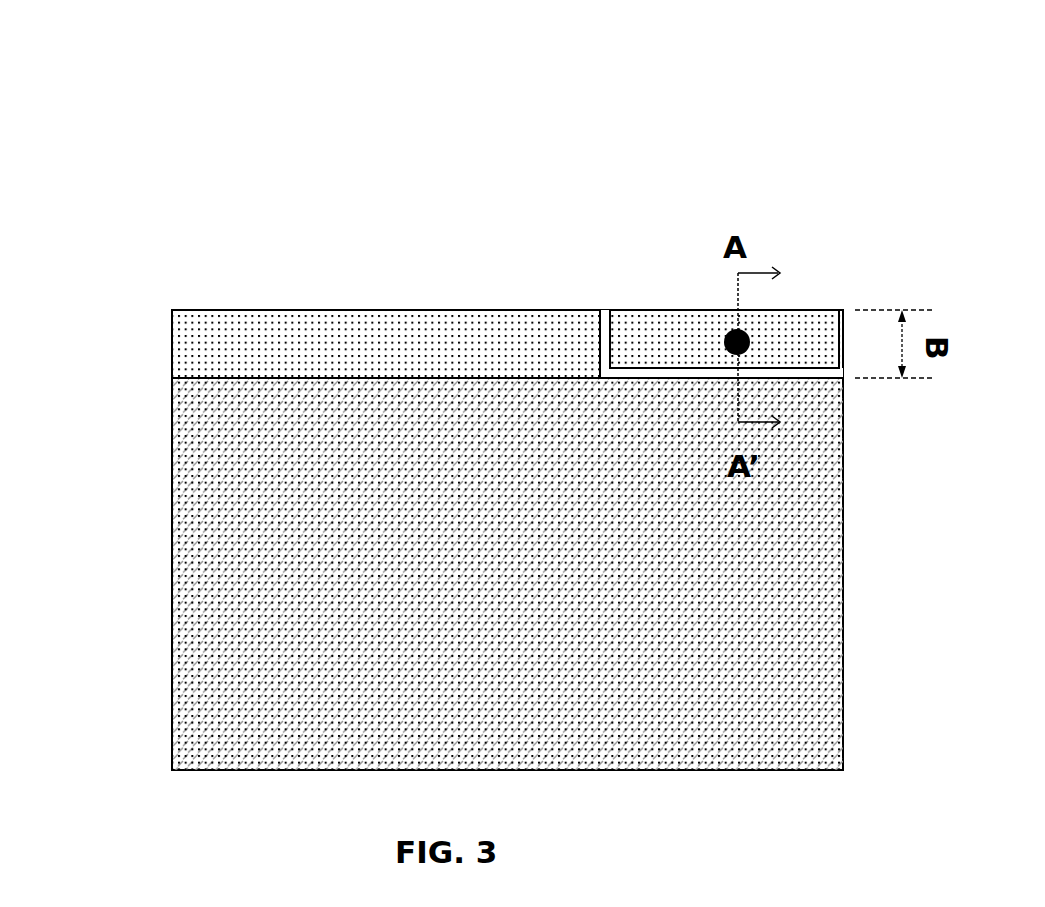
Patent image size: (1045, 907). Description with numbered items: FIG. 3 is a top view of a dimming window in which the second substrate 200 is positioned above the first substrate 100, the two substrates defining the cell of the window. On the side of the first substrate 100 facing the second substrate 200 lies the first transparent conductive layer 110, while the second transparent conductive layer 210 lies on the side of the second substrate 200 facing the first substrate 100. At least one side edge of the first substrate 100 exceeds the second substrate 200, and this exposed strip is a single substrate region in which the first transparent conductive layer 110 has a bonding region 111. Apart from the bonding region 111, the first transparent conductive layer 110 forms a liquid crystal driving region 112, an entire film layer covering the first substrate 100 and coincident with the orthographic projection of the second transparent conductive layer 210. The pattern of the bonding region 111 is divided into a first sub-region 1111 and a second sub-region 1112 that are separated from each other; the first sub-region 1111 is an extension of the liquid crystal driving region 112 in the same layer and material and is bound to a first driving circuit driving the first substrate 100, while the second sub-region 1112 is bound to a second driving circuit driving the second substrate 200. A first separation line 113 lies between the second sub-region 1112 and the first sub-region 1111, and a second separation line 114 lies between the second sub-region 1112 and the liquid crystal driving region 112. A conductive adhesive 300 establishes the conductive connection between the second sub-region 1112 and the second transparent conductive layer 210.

The first substrate 100 is at (472, 388).
The first transparent conductive layer 110 is at (498, 57).
The bonding region 111 is at (620, 108).
The liquid crystal driving region 112 is at (292, 400).
The first sub-region 1111 is at (478, 310).
The second sub-region 1112 is at (662, 310).
The first separation line 113 is at (600, 310).
The second separation line 114 is at (800, 365).
The conductive adhesive 300 is at (715, 310).
The second substrate 200 is at (200, 677).
The second transparent conductive layer 210 is at (172, 617).